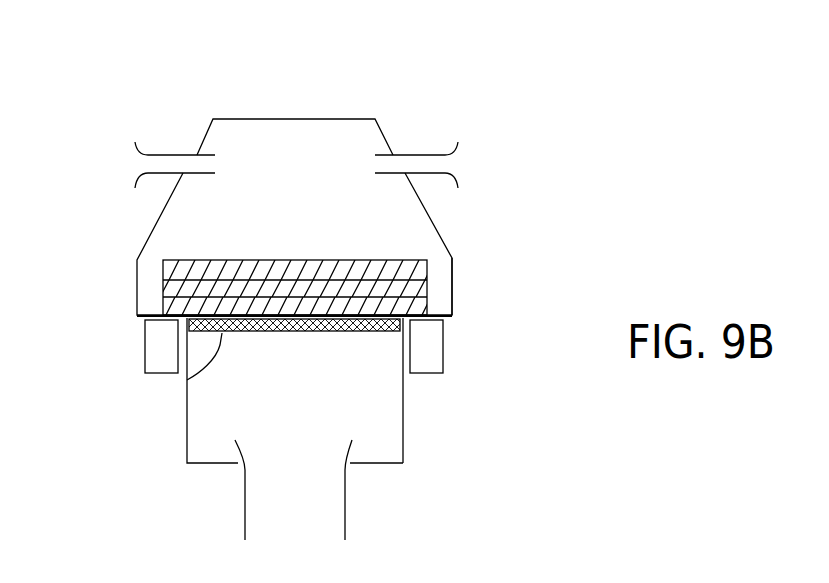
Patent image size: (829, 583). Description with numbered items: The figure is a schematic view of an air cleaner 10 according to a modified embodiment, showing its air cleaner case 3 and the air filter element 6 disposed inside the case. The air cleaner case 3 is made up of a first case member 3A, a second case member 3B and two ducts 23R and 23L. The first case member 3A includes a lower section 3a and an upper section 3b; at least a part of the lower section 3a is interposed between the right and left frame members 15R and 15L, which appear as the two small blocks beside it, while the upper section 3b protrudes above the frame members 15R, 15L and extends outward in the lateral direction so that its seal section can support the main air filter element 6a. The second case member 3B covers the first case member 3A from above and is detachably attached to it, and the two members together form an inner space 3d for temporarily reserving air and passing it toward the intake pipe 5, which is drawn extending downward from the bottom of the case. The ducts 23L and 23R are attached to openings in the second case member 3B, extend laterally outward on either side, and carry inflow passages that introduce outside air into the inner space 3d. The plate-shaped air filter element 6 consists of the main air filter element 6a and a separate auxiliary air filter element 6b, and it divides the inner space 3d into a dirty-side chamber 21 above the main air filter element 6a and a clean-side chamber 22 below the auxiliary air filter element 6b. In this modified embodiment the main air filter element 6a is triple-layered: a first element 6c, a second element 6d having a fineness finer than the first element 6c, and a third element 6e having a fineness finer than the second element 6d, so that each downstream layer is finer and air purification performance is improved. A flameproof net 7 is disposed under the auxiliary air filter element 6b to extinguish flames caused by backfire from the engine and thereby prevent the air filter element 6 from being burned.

The air cleaner 10 is at (372, 101).
The duct 23L is at (167, 153).
The duct 23R is at (422, 153).
The dirty-side chamber 21 is at (428, 215).
The air filter element 6 is at (230, 296).
The main air filter element 6a is at (240, 282).
The auxiliary air filter element 6b is at (145, 322).
The first element 6c is at (163, 270).
The second element 6d is at (163, 290).
The third element 6e is at (163, 305).
The air cleaner case 3 is at (370, 360).
The first case member 3A is at (357, 386).
The second case member 3B is at (455, 280).
The lower section 3a is at (405, 397).
The upper section 3b is at (447, 319).
The inner space 3d is at (300, 370).
The frame member 15L is at (145, 358).
The frame member 15R is at (410, 358).
The flameproof net 7 is at (187, 380).
The clean-side chamber 22 is at (392, 428).
The intake pipe 5 is at (345, 512).